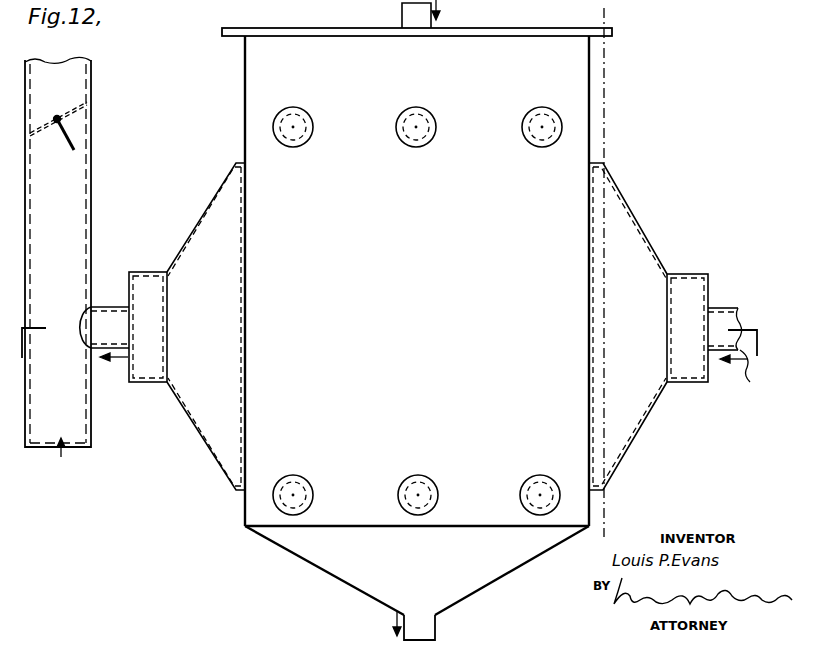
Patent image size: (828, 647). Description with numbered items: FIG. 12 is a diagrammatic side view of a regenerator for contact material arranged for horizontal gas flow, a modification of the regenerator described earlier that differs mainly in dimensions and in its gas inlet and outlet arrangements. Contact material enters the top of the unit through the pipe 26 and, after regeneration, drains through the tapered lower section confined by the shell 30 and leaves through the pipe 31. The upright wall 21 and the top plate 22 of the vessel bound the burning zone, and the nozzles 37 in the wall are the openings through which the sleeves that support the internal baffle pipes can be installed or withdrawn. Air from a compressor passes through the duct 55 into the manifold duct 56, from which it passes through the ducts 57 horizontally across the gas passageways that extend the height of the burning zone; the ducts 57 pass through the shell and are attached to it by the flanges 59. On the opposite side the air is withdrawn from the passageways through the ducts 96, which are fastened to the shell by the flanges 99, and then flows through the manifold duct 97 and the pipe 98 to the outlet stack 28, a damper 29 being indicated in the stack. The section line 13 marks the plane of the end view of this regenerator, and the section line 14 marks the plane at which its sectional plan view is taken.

The section line 13- 13 is at (608, 18).
The section line 14- 14 is at (406, 344).
The casing side wall 21 is at (245, 66).
The top plate 22 is at (553, 18).
The pipe 26 is at (402, 12).
The stack 28 is at (89, 169).
The damper 29 is at (78, 110).
The shell 30 is at (330, 562).
The pipe 31 is at (437, 622).
The nozzles 37 is at (303, 144).
The duct 55 is at (722, 306).
The manifold duct 56 is at (690, 273).
The ducts 57 is at (640, 226).
The flanges 59 is at (592, 160).
The ducts 96 is at (197, 429).
The manifold duct 97 is at (148, 271).
The pipe 98 is at (107, 307).
The flanges 99 is at (243, 162).